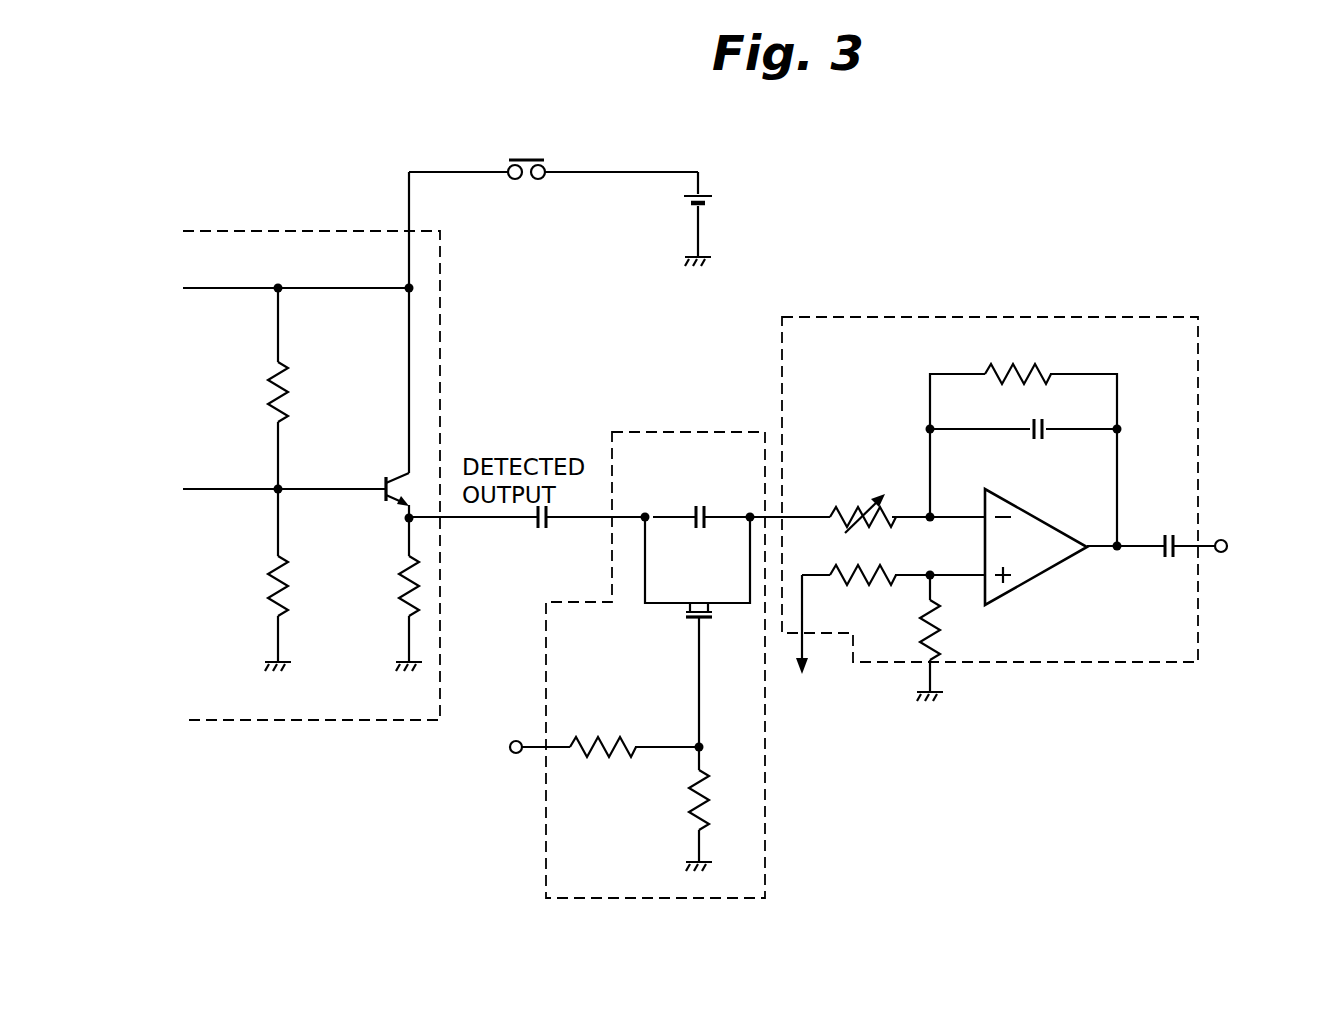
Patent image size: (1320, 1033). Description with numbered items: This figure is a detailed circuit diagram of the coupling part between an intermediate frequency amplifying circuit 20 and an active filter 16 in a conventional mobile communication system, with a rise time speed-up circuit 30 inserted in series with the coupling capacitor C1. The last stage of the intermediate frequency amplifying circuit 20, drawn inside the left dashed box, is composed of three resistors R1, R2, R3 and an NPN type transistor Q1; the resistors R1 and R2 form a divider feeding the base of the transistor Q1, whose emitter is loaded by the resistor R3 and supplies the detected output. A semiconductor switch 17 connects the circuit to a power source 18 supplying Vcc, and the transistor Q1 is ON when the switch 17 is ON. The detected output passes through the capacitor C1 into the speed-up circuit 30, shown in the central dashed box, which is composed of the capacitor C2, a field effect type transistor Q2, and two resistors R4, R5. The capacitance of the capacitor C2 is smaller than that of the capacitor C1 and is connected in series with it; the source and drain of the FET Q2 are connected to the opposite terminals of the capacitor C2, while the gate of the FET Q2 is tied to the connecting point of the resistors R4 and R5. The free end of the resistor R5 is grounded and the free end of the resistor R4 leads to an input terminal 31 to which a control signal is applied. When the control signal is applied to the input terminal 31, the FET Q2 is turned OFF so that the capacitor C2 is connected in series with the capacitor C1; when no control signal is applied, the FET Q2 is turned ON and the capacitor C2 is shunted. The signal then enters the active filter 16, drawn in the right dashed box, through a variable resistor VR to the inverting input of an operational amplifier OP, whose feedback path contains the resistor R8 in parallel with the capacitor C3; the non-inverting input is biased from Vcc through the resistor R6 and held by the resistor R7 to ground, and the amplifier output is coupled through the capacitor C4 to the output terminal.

The active filter 16 is at (1030, 481).
The semiconductor switch 17 is at (513, 158).
The power source 18 is at (703, 189).
The intermediate frequency amplifying circuit 20 is at (311, 476).
The speed-up circuit 30 is at (682, 665).
The input terminal 31 is at (513, 742).
The resistor R1 is at (296, 388).
The resistor R2 is at (294, 580).
The resistor R3 is at (393, 594).
The resistor R4 is at (610, 734).
The resistor R5 is at (714, 809).
The resistor R6 is at (893, 589).
The resistor R7 is at (947, 638).
The resistor R8 is at (1018, 359).
The capacitor C1 is at (544, 535).
The capacitor C2 is at (701, 504).
The capacitor C3 is at (1023, 446).
The capacitor C4 is at (1185, 531).
The NPN type transistor Q1 is at (390, 483).
The field effect type transistor Q2 is at (697, 632).
The variable resistor VR is at (863, 502).
The operational amplifier OP is at (1040, 572).